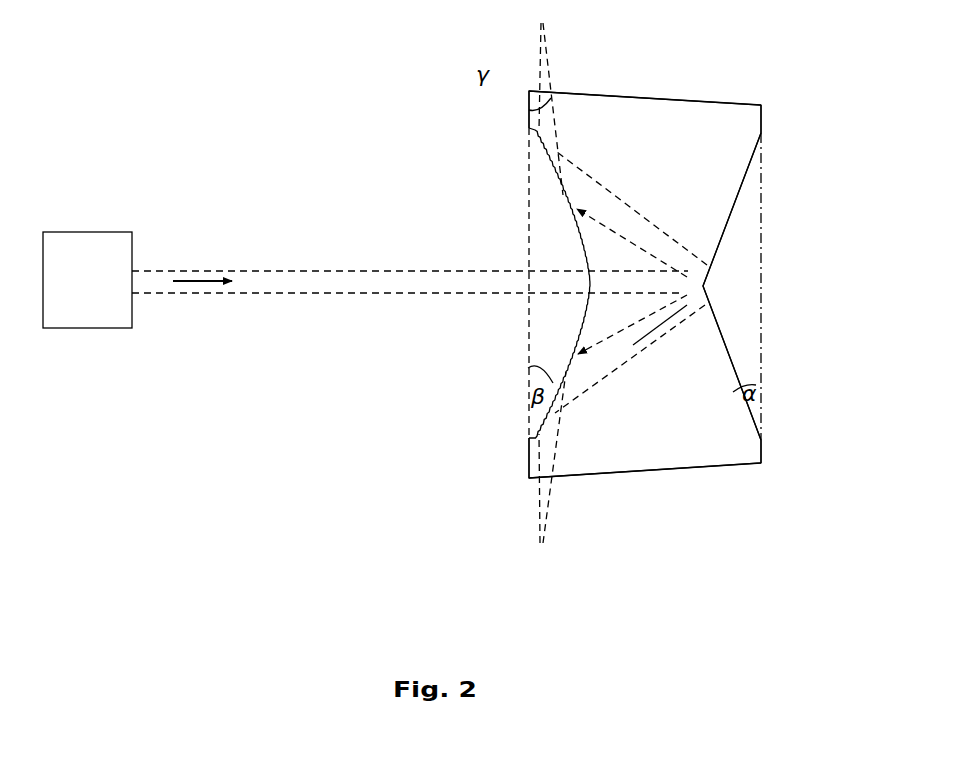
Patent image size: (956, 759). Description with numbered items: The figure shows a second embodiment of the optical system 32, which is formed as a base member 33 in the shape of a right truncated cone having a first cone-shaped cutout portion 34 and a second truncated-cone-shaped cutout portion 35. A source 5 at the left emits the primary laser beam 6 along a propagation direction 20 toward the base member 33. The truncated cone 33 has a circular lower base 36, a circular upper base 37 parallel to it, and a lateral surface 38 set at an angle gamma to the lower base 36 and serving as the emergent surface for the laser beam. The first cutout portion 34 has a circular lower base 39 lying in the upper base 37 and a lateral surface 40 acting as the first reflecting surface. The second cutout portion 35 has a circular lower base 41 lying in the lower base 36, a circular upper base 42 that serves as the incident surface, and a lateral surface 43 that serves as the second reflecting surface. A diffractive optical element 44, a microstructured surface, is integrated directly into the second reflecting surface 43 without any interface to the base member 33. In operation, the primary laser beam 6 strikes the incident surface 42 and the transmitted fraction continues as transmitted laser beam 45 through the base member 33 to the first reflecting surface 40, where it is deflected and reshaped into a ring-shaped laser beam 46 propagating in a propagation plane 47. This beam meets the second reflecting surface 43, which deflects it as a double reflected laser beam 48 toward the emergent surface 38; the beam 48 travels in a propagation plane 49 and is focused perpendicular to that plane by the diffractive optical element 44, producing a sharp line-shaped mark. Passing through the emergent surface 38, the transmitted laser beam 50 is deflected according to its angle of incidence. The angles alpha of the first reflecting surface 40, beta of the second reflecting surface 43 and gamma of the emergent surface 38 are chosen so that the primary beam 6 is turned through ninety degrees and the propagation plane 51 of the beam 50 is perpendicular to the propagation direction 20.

The light source 5 is at (94, 296).
The primary laser beam 6 is at (286, 294).
The propagation direction 20 is at (203, 281).
The optical system 32 is at (336, 146).
The base member 33 is at (588, 92).
The first cone-shaped cutout portion 34 is at (749, 296).
The second truncated-cone-shaped cutout portion 35 is at (573, 252).
The lower base 36 is at (526, 117).
The upper base 37 is at (765, 117).
The lateral surface 38 is at (645, 94).
The lower base of first cutout portion 39 is at (765, 273).
The first reflecting surface 40 is at (736, 189).
The lower base of second cutout portion 41 is at (526, 357).
The incident surface 42 is at (586, 288).
The second reflecting surface 43 is at (549, 177).
The diffractive optical element 44 is at (591, 198).
The transmitted laser beam 45 is at (655, 270).
The ring-shaped laser beam 46 is at (638, 213).
The propagation plane 47 is at (663, 328).
The double reflected laser beam 48 is at (551, 119).
The propagation plane 49 is at (549, 439).
The transmitted laser beam 50 is at (538, 33).
The propagation plane 51 is at (545, 508).